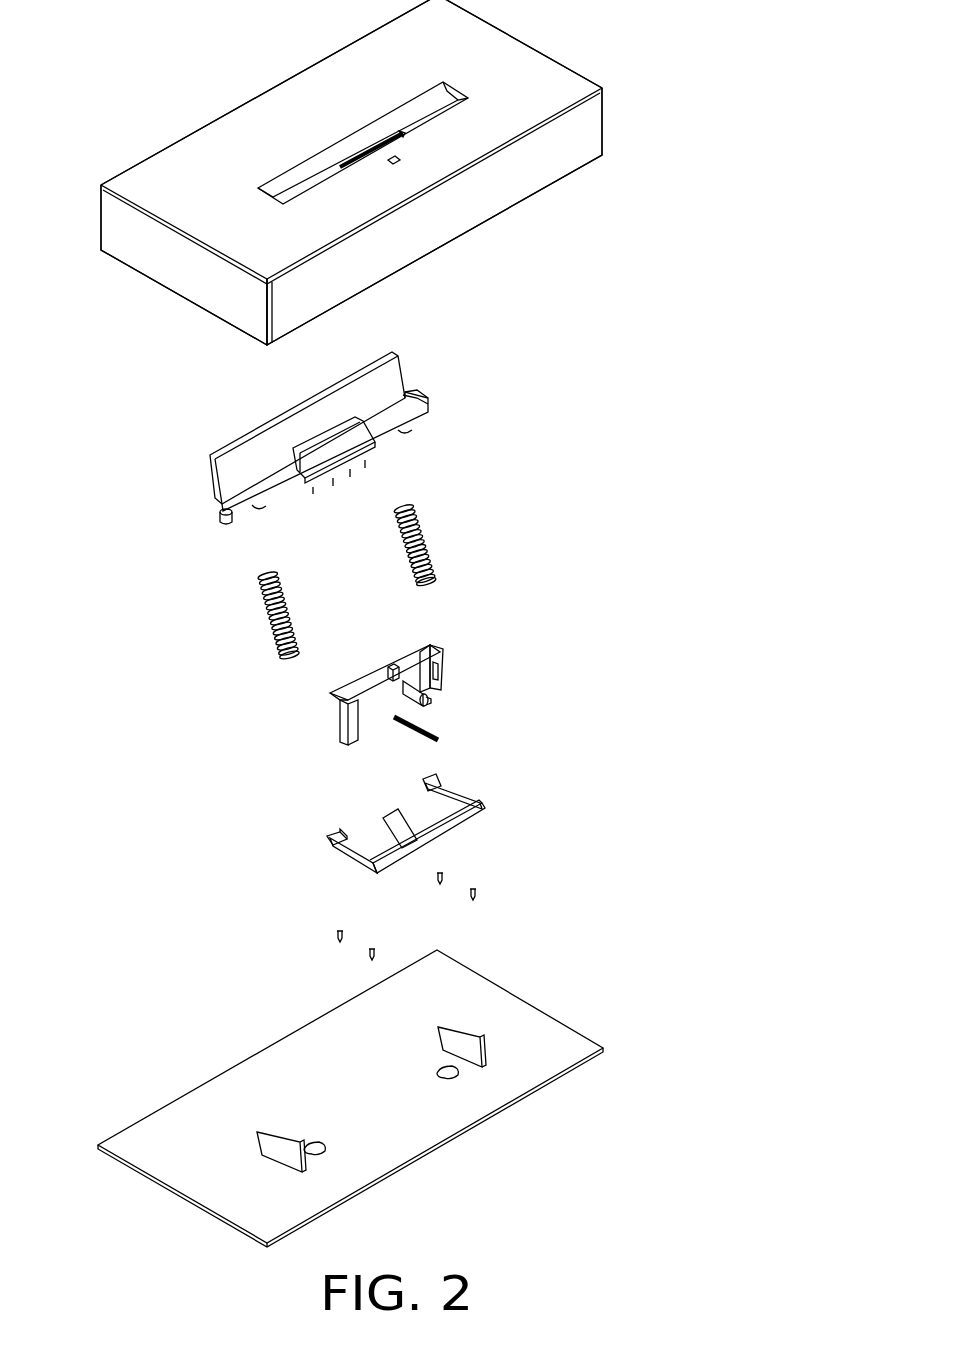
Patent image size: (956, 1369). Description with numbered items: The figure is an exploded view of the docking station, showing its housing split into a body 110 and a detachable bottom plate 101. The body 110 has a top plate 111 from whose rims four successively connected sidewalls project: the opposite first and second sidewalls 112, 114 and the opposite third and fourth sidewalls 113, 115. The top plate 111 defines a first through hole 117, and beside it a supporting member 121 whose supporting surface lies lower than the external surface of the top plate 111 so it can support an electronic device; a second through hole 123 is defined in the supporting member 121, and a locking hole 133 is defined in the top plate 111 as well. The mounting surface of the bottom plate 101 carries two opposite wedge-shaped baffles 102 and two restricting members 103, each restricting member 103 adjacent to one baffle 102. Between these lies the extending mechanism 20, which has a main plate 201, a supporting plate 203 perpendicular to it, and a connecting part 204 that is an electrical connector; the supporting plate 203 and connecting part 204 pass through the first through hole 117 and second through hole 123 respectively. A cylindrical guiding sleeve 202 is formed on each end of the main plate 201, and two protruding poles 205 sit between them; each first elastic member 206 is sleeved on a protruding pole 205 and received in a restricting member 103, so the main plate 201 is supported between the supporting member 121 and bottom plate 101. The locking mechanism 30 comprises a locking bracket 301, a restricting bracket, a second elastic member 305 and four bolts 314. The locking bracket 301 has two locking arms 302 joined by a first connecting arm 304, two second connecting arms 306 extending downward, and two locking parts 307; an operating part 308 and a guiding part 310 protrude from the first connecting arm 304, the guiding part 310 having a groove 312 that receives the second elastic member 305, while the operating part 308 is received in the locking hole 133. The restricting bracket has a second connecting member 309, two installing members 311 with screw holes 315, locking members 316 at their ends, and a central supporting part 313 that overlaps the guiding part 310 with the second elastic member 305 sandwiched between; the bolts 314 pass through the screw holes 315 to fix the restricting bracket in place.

The body 110 is at (612, 116).
The top plate 111 is at (556, 85).
The first sidewall 112 is at (140, 260).
The third sidewall 113 is at (566, 155).
The second sidewall 114 is at (540, 50).
The fourth sidewall 115 is at (160, 148).
The first through hole 117 is at (302, 170).
The supporting member 121 is at (309, 184).
The second through hole 123 is at (405, 135).
The locking hole 133 is at (397, 164).
The extending mechanism 20 is at (291, 465).
The main plate 201 is at (403, 412).
The guiding sleeve 202 is at (223, 518).
The supporting plate 203 is at (258, 455).
The connecting part 204 is at (323, 442).
The protruding pole 205 is at (263, 508).
The first elastic member 206 is at (428, 556).
The locking mechanism 30 is at (442, 779).
The locking bracket 301 is at (413, 691).
The locking arm 302 is at (337, 692).
The first connecting arm 304 is at (430, 641).
The second elastic member 305 is at (440, 739).
The second connecting arm 306 is at (355, 724).
The locking part 307 is at (343, 733).
The operating part 308 is at (391, 666).
The second connecting member 309 is at (455, 823).
The guiding part 310 is at (433, 684).
The installing member 311 is at (352, 855).
The groove 312 is at (430, 702).
The supporting part 313 is at (395, 818).
The bolt 314 is at (478, 897).
The screw hole 315 is at (443, 782).
The locking member 316 is at (330, 838).
The bottom plate 101 is at (542, 1058).
The baffle 102 is at (468, 1043).
The restricting member 103 is at (460, 1075).